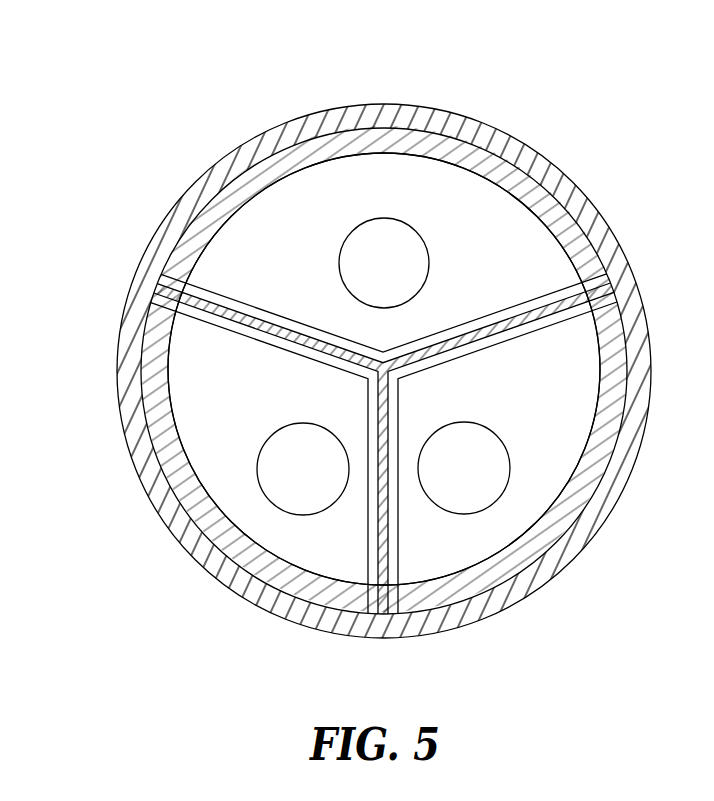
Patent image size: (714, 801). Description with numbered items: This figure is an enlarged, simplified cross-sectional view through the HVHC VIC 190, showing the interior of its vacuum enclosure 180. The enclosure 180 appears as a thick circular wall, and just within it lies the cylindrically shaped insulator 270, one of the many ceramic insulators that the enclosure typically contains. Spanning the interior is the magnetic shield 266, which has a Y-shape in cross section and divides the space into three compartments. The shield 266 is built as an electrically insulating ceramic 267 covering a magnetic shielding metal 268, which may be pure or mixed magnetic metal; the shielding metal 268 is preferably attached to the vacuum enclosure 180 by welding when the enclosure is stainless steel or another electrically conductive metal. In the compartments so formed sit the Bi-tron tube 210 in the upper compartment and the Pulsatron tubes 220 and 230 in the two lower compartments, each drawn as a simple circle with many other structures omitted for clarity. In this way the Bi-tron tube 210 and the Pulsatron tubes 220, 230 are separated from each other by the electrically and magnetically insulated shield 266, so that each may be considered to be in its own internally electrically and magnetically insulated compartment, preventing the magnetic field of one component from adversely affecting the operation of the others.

The HVHC VIC 190 is at (167, 98).
The vacuum enclosure 180 is at (263, 148).
The cylindrically shaped insulator 270 is at (481, 175).
The magnetic shield 266 is at (238, 271).
The electrically insulating ceramic 267 is at (467, 321).
The magnetic shielding metal 268 is at (512, 337).
The Bi-tron tube 210 is at (413, 279).
The Pulsatron tube 220 is at (331, 483).
The Pulsatron tube 230 is at (493, 483).